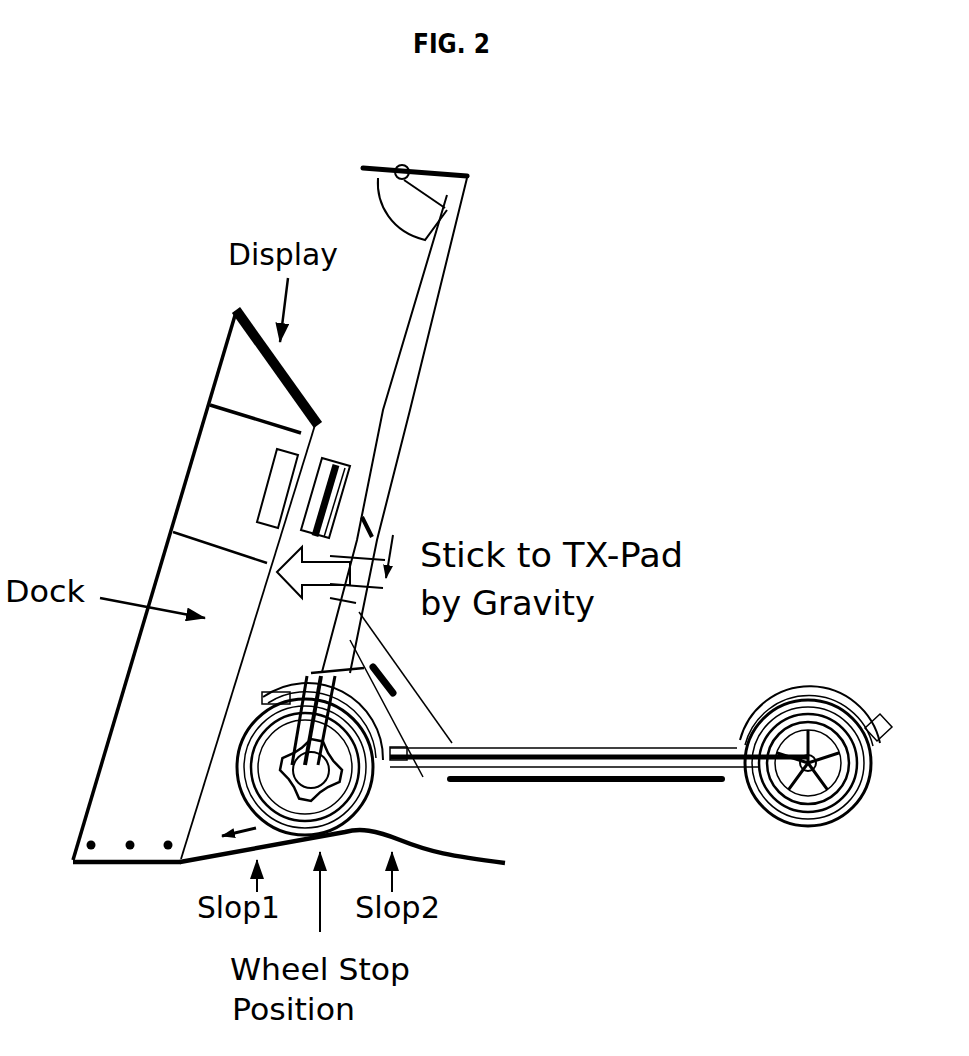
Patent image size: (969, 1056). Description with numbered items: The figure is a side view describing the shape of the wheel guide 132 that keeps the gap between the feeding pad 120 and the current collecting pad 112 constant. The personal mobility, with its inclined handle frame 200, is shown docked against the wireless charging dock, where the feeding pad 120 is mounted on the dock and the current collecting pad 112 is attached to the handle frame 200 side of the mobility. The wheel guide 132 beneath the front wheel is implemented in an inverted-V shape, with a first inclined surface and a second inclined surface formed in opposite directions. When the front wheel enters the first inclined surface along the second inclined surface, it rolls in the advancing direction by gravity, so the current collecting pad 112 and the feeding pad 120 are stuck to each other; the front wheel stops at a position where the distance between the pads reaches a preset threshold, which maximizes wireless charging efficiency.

The handle frame 200 is at (440, 307).
The current collecting pad 112 is at (342, 453).
The feeding pad 120 is at (262, 478).
The wheel guide 132 is at (458, 839).